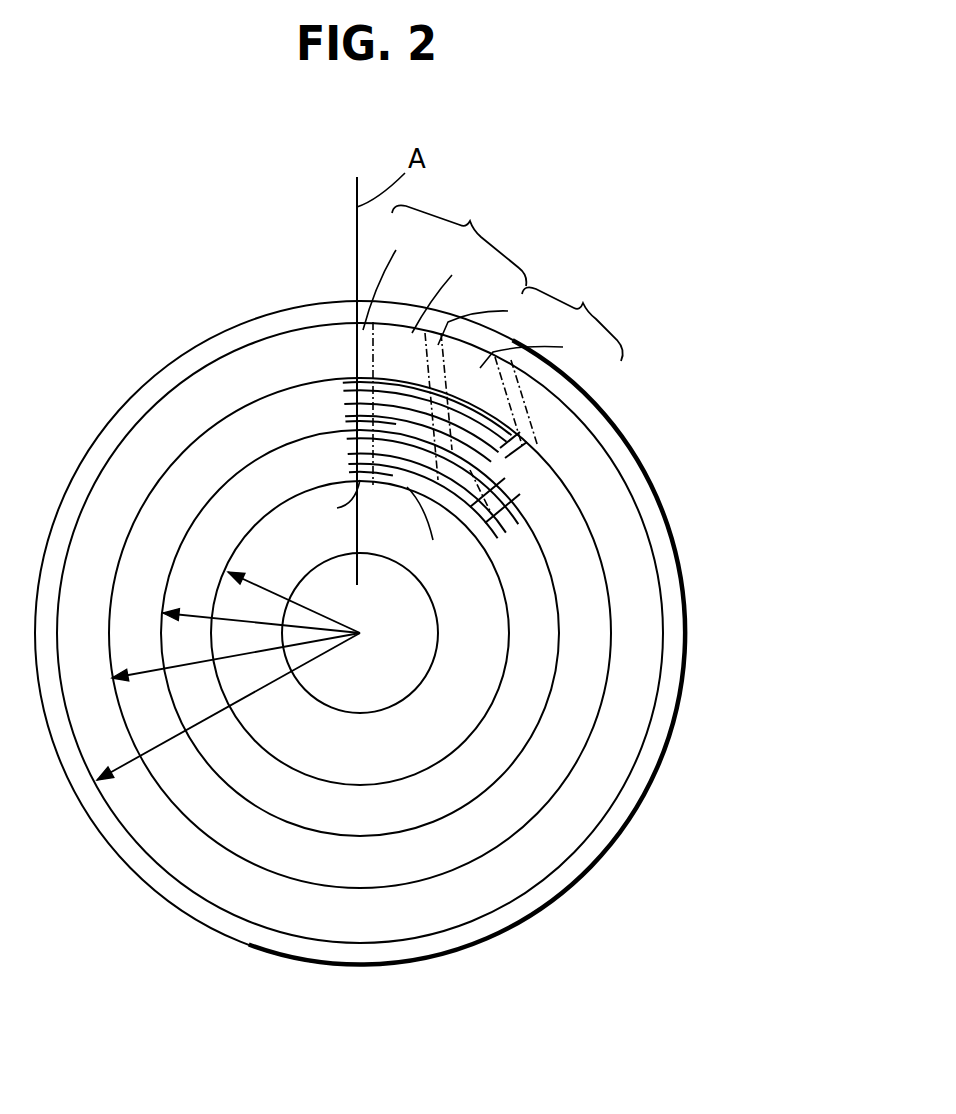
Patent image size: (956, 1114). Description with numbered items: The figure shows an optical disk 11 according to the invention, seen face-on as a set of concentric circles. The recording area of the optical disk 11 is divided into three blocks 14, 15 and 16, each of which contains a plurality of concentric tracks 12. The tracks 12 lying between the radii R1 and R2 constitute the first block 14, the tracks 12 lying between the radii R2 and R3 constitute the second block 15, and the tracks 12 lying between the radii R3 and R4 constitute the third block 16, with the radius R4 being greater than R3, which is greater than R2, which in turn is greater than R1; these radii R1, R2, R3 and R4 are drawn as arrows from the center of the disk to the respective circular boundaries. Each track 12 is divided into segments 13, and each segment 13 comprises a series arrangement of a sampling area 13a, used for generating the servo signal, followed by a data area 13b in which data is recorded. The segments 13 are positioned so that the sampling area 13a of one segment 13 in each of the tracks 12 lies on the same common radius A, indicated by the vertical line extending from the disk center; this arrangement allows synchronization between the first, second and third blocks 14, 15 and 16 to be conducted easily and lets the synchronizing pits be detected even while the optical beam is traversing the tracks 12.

The optical disk 11 is at (636, 240).
The tracks 12 is at (372, 425).
The segments 13 is at (507, 279).
The sampling area 13a is at (420, 385).
The data area 13b is at (508, 413).
The first block 14 is at (540, 705).
The second block 15 is at (605, 657).
The third block 16 is at (650, 582).
The radius R1 is at (294, 593).
The radius R2 is at (261, 608).
The radius R3 is at (236, 657).
The radius R4 is at (222, 706).